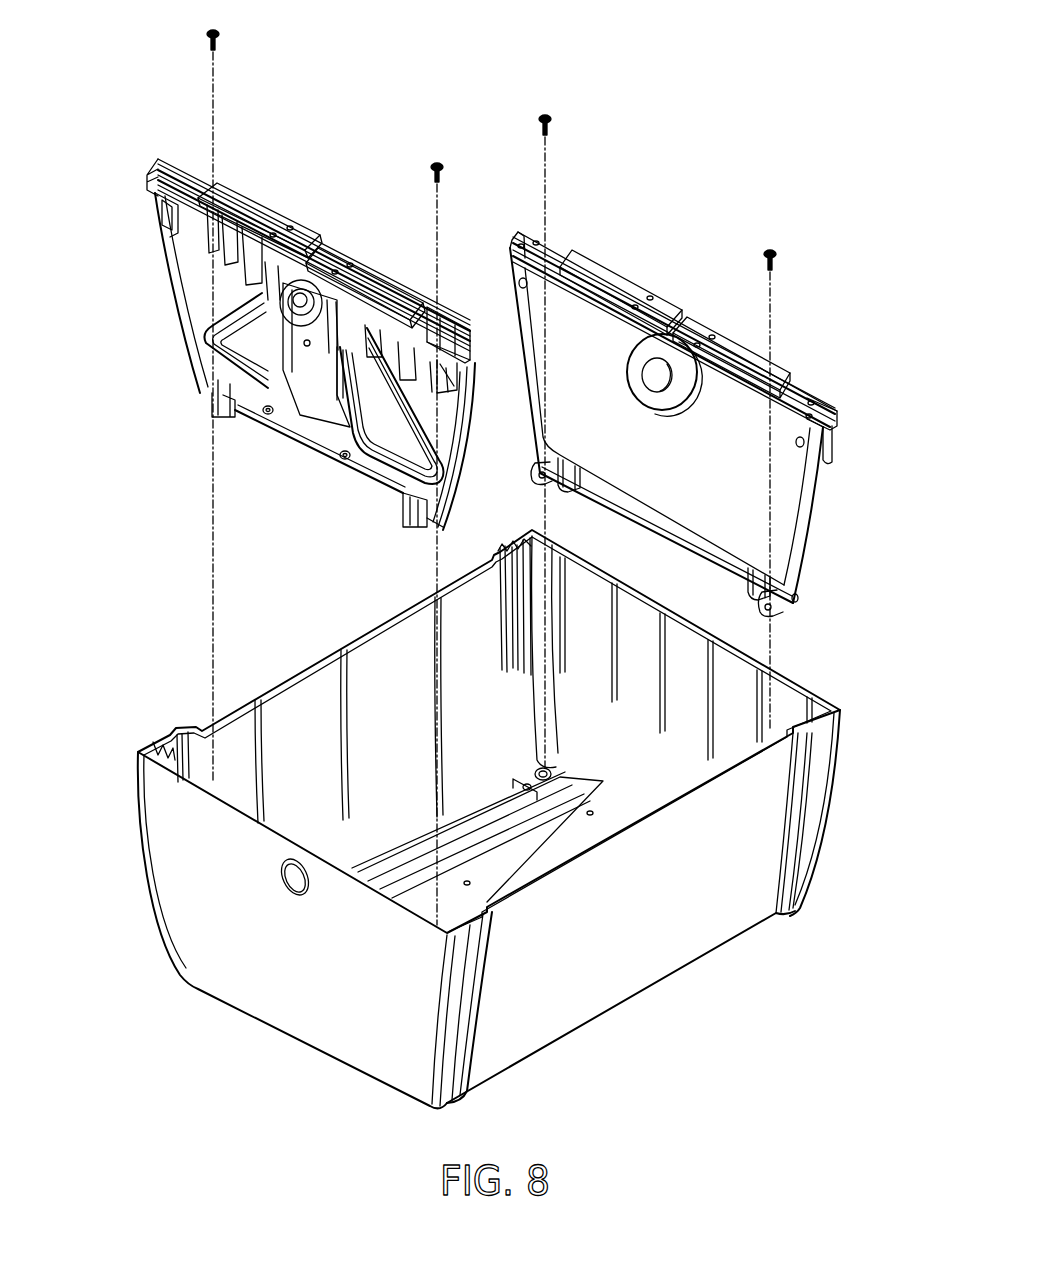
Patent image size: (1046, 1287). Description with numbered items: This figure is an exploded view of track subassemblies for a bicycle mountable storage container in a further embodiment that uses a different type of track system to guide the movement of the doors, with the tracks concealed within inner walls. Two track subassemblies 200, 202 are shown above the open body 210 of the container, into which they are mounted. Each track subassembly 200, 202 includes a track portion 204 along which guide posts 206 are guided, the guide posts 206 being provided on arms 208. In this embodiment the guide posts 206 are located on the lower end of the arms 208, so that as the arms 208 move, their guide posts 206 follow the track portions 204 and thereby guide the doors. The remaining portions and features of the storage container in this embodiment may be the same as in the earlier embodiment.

The track subassembly 200 is at (289, 323).
The track subassembly 202 is at (886, 381).
The track portion 204 is at (222, 324).
The guide post 206 is at (267, 414).
The arm 208 is at (330, 430).
The body 210 is at (679, 956).